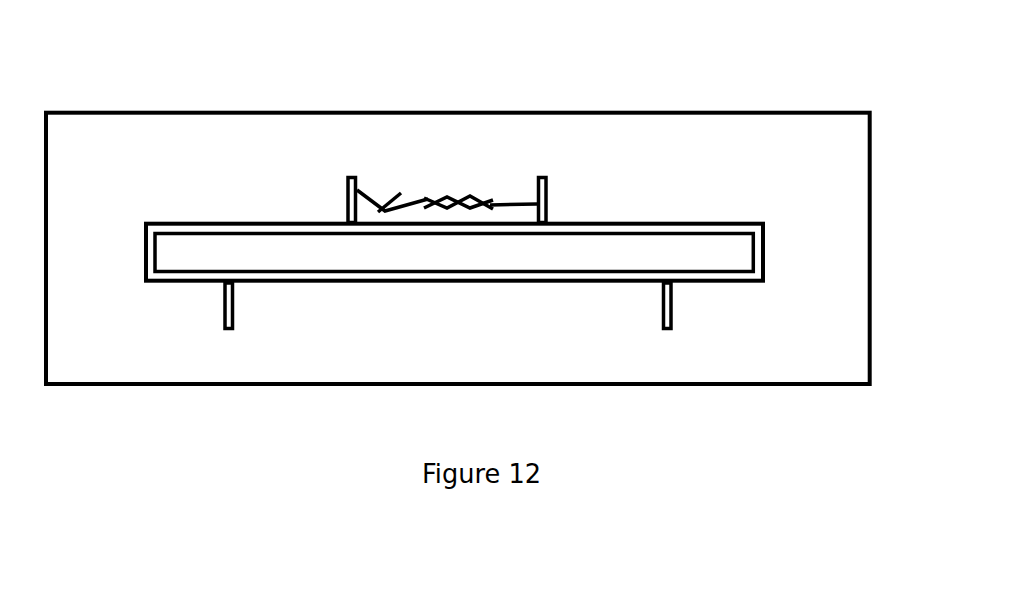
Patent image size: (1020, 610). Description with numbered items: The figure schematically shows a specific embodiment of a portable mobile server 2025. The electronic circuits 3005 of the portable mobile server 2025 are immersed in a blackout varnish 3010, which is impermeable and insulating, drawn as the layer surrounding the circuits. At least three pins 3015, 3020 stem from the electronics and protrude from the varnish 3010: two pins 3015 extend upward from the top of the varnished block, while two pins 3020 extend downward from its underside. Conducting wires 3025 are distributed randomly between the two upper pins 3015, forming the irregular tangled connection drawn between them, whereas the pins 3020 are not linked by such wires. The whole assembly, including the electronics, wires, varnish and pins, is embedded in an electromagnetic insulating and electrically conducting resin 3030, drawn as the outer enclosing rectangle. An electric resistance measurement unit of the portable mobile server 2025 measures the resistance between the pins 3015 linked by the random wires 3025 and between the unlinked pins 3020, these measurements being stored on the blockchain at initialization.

The portable mobile server 2025 is at (458, 84).
The electronic circuits 3005 is at (158, 252).
The blackout varnish 3010 is at (760, 258).
The pins 3015 is at (548, 185).
The pins 3020 is at (668, 315).
The conducting wires 3025 is at (415, 184).
The electromagnetic insulating and electrically conducting resin 3030 is at (860, 350).